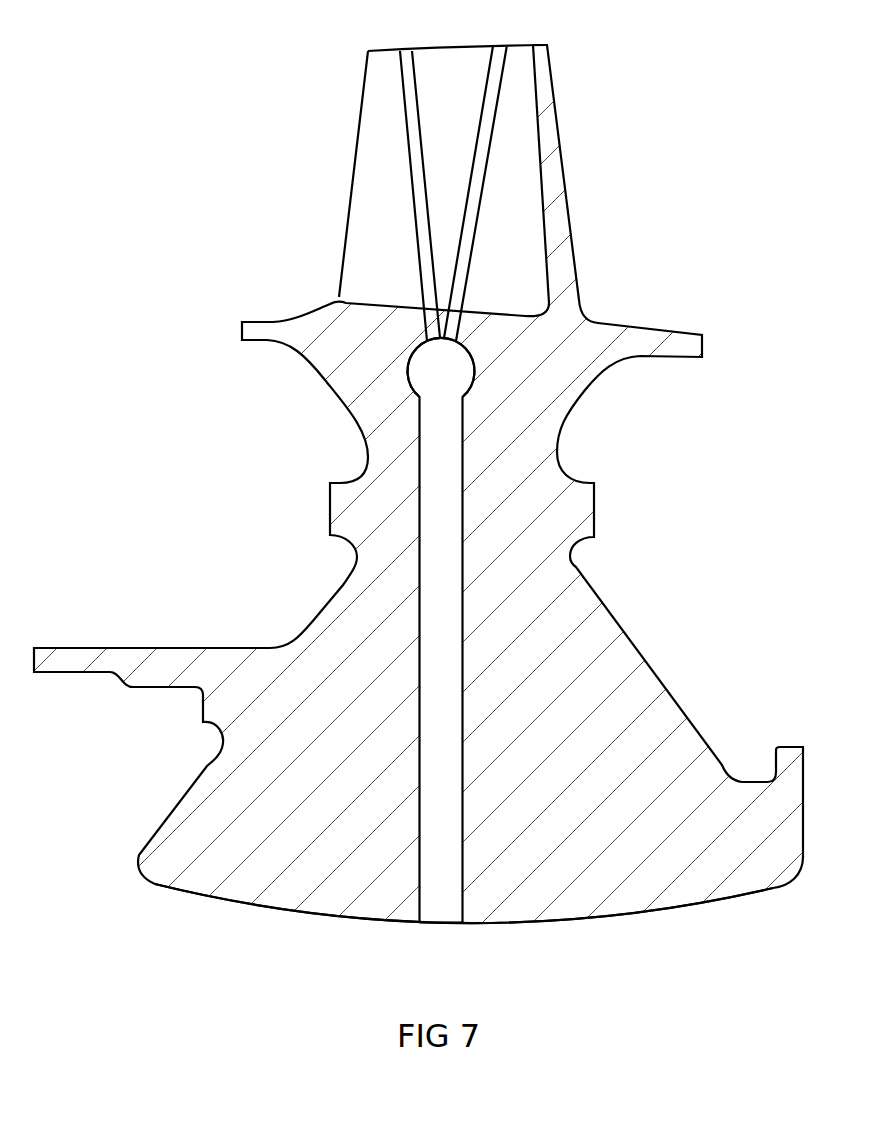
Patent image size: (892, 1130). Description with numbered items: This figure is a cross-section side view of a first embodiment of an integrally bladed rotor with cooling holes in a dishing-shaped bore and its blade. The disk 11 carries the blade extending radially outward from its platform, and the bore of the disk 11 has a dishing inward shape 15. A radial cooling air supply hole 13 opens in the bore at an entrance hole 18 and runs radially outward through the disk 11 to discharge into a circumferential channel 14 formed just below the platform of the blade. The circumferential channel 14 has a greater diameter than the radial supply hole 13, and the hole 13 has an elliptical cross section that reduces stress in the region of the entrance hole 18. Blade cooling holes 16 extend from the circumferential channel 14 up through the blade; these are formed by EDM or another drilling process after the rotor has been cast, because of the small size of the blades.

The disk 11 is at (548, 633).
The radial cooling air supply hole 13 is at (440, 582).
The circumferential channel 14 is at (430, 371).
The dishing inward shape 15 is at (547, 922).
The blade cooling hole 16 is at (475, 173).
The entrance hole 18 is at (438, 922).